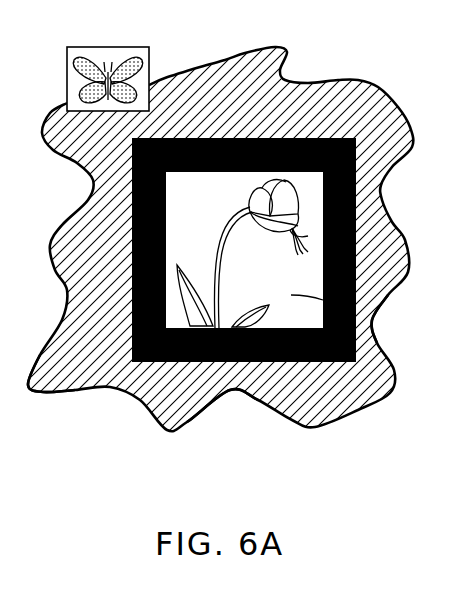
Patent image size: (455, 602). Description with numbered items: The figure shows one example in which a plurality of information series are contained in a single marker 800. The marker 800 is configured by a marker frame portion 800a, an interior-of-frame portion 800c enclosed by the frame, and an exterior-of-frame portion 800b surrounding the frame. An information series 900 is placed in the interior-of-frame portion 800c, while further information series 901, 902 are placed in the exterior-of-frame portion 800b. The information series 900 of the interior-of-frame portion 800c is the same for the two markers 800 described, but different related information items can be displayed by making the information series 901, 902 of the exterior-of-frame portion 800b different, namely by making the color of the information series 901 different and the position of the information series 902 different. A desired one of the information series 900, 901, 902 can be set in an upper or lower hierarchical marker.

The marker 800 is at (333, 80).
The marker frame portion 800a is at (218, 364).
The exterior-of-frame portion 800b is at (58, 390).
The interior-of-frame portion 800c is at (363, 310).
The information series 900 is at (292, 211).
The information series 901 is at (383, 277).
The information series 902 is at (148, 58).